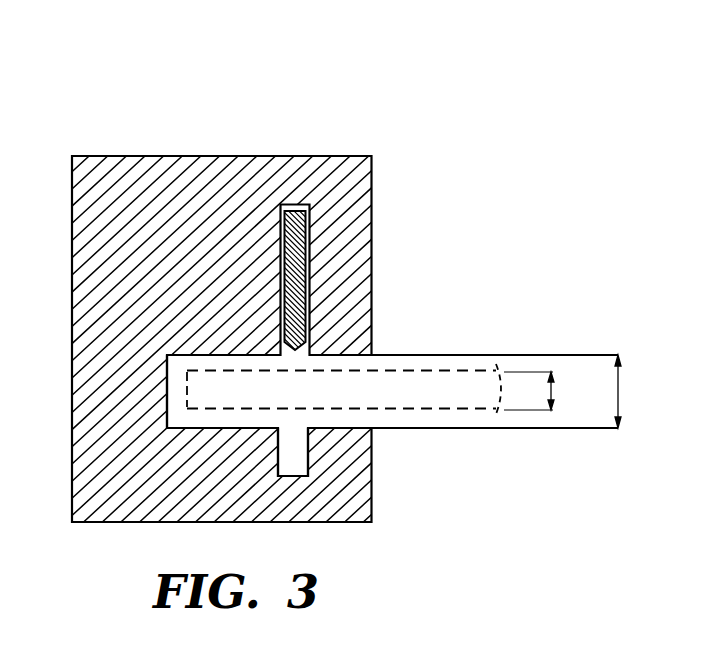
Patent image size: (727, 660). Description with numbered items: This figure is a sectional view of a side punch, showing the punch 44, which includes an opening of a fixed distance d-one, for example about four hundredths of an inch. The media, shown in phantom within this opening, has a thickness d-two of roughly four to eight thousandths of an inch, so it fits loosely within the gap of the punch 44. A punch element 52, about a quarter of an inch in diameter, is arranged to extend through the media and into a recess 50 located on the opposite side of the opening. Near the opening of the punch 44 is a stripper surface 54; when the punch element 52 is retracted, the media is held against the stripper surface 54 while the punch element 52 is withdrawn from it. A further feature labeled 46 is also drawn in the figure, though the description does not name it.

The punch 44 is at (243, 179).
The die channel 46 is at (360, 355).
The recess 50 is at (272, 449).
The punch element 52 is at (302, 240).
The stripper surface 54 is at (240, 356).